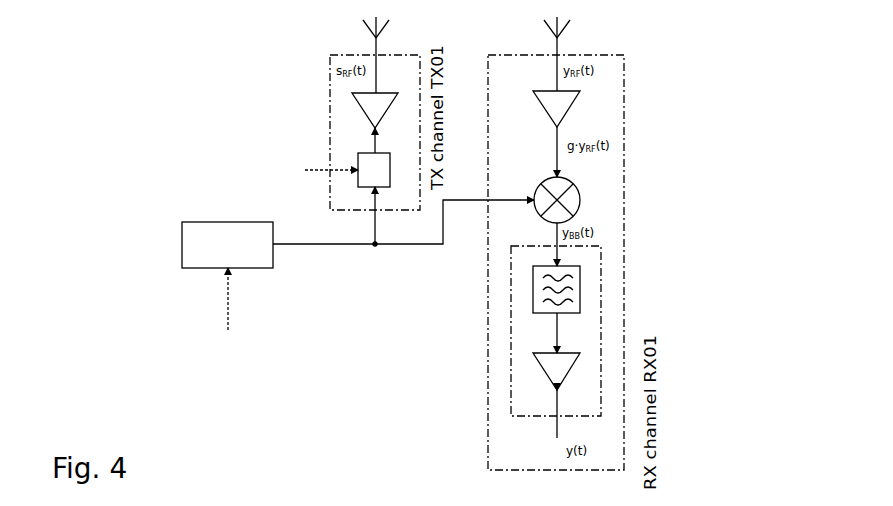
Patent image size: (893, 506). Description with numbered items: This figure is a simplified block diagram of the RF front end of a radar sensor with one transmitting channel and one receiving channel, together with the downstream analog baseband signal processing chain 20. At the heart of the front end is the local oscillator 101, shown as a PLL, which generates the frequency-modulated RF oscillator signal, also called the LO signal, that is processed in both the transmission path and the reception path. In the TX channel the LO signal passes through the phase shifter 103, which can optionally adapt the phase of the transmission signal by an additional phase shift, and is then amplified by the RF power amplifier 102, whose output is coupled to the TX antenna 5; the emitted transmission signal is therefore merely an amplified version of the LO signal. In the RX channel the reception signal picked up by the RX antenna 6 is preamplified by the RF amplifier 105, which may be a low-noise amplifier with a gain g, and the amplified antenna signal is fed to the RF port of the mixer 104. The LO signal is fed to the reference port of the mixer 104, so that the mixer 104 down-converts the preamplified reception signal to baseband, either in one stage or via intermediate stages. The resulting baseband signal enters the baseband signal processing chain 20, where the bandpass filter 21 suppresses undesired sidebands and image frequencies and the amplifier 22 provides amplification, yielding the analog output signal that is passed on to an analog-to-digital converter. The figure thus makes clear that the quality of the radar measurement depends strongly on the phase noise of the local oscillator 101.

The TX antenna 5 is at (365, 31).
The RX antenna 6 is at (568, 31).
The baseband signal processing chain 20 is at (511, 413).
The bandpass filter 21 is at (533, 293).
The amplifier 22 is at (533, 373).
The local oscillator 101 is at (221, 222).
The RF power amplifier 102 is at (357, 118).
The phase shifter 103 is at (358, 160).
The mixer 104 is at (581, 193).
The RF amplifier 105 is at (575, 104).